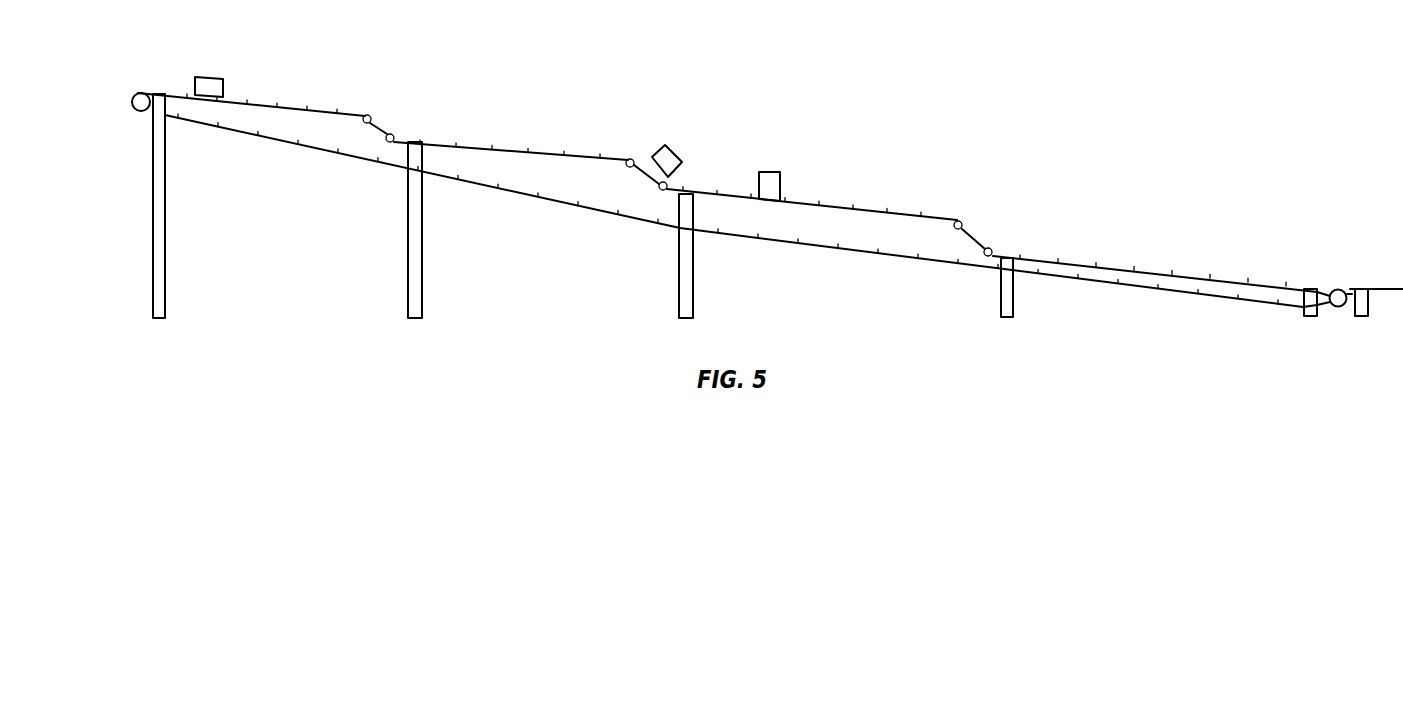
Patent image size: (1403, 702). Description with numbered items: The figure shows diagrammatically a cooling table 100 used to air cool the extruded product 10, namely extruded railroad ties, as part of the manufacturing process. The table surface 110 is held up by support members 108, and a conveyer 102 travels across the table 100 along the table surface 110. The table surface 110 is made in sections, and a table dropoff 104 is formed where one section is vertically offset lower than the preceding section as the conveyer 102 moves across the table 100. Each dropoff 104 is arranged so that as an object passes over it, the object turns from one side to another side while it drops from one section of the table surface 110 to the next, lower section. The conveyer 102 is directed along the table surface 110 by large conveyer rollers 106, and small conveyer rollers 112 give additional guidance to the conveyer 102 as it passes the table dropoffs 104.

The extruded product 10 is at (217, 77).
The cooling table 100 is at (288, 262).
The conveyer 102 is at (547, 202).
The table dropoff 104 is at (385, 123).
The large conveyer rollers 106 is at (133, 95).
The support members 108 is at (166, 252).
The table surface 110 is at (298, 105).
The small conveyer rollers 112 is at (962, 222).